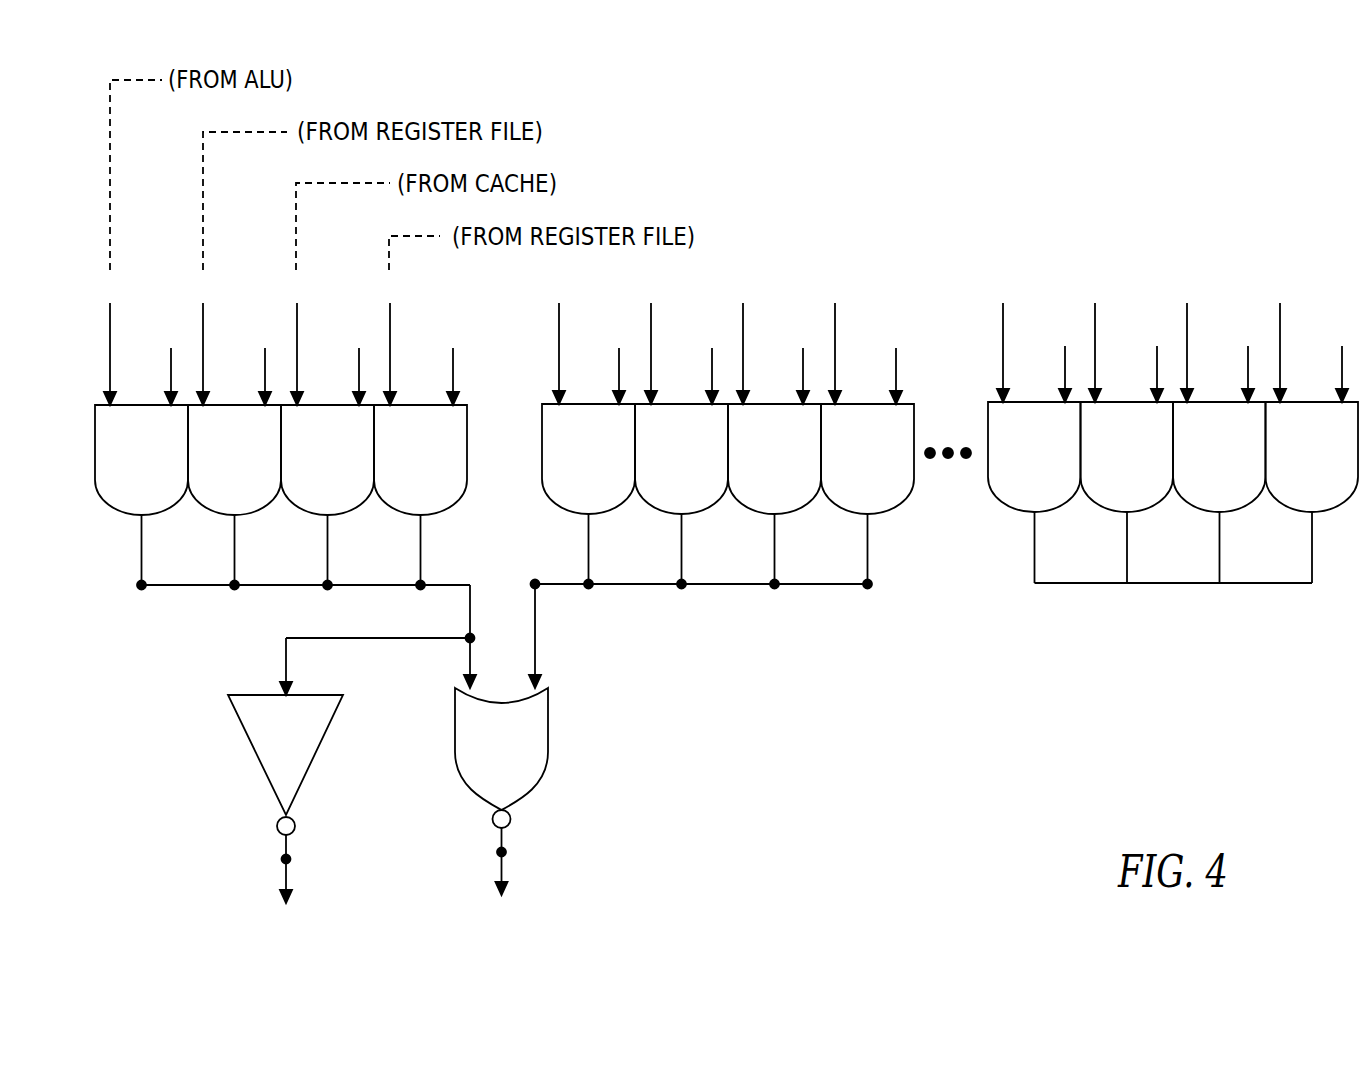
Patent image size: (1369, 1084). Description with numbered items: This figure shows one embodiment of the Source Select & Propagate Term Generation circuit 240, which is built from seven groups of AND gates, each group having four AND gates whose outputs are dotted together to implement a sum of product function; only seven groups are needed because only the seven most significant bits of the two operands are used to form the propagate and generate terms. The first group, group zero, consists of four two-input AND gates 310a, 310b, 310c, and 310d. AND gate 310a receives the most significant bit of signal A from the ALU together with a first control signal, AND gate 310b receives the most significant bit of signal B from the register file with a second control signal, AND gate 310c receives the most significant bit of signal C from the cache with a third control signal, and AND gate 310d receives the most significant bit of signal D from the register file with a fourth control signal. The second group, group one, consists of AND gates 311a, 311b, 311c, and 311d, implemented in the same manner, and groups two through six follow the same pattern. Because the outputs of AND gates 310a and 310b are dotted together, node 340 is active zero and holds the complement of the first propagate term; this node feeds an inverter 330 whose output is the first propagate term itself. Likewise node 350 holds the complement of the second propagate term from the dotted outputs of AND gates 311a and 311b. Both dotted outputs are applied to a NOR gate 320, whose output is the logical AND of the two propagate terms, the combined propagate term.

The Source Select & Propagate Term Generation circuit 240 is at (848, 753).
The AND gate 310a is at (118, 505).
The AND gate 310b is at (225, 505).
The AND gate 310c is at (316, 505).
The AND gate 310d is at (415, 505).
The AND gate 311a is at (568, 504).
The AND gate 311b is at (671, 504).
The AND gate 311c is at (758, 504).
The AND gate 311d is at (859, 504).
The NOR gate 320 is at (475, 775).
The inverter 330 is at (267, 768).
The node 340 is at (470, 630).
The node 350 is at (537, 590).